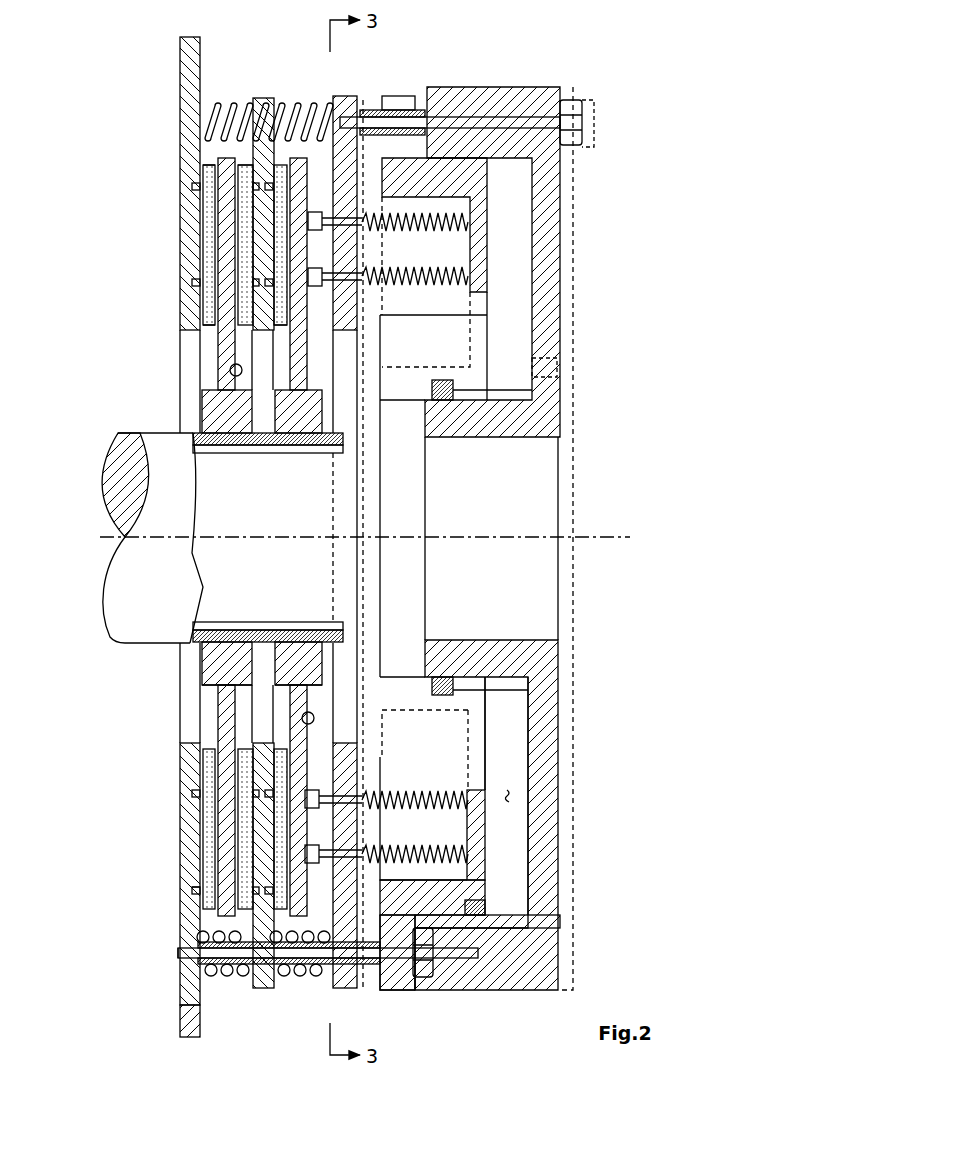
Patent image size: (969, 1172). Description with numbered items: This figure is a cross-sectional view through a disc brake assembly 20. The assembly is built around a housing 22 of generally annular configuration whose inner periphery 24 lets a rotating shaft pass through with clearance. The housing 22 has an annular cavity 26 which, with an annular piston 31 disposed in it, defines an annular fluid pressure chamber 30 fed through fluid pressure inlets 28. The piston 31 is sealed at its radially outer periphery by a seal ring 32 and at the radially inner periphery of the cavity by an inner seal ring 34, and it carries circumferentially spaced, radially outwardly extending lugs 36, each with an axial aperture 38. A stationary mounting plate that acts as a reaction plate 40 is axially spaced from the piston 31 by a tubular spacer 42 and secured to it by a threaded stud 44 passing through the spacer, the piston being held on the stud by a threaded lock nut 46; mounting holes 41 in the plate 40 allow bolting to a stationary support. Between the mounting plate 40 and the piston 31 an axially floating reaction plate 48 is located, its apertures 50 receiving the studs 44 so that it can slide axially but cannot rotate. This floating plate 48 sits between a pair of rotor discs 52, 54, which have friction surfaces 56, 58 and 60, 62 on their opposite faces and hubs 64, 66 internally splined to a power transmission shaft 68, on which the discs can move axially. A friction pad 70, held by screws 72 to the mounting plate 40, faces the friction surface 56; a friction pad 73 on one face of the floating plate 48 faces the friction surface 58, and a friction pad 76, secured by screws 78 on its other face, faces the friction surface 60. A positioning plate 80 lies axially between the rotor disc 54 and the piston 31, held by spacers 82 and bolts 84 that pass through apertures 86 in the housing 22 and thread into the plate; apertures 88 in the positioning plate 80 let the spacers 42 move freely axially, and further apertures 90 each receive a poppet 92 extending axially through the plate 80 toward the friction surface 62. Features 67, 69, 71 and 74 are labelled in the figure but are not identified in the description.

The disc brake assembly 20 is at (660, 102).
The housing 22 is at (558, 780).
The inner periphery 24 is at (523, 640).
The annular cavity 26 is at (527, 248).
The fluid pressure inlets 28 is at (545, 358).
The annular fluid pressure chamber 30 is at (512, 797).
The annular piston 31 is at (487, 752).
The seal ring 32 is at (485, 908).
The inner seal ring 34 is at (455, 390).
The lugs 36 is at (402, 94).
The aperture 38 is at (405, 985).
The mounting plate 40 is at (192, 889).
The mounting holes 41 is at (183, 70).
The tubular spacer 42 is at (430, 905).
The threaded stud 44 is at (180, 953).
The threaded lock nut 46 is at (425, 953).
The axially floating reaction plate 48 is at (258, 350).
The apertures 50 is at (245, 975).
The rotor disc 52 is at (245, 260).
The rotor disc 54 is at (280, 300).
The friction surface 56 is at (222, 362).
The friction surface 58 is at (230, 372).
The friction surface 60 is at (287, 700).
The friction surface 62 is at (302, 718).
The hub 64 is at (222, 662).
The hub 66 is at (298, 410).
The shaft surface 67 is at (200, 632).
The power transmission shaft 68 is at (150, 571).
The shaft end 69 is at (190, 460).
The friction pad 70 is at (207, 168).
The key 71 is at (230, 470).
The screws 72 is at (205, 190).
The friction pad 73 is at (242, 150).
The pin 74 is at (253, 282).
The friction pad 76 is at (258, 98).
The screws 78 is at (288, 200).
The positioning plate 80 is at (338, 118).
The spacers 82 is at (372, 110).
The bolts 84 is at (512, 118).
The apertures 86 is at (560, 92).
The apertures 88 is at (344, 958).
The apertures 90 is at (382, 167).
The poppet 92 is at (400, 248).